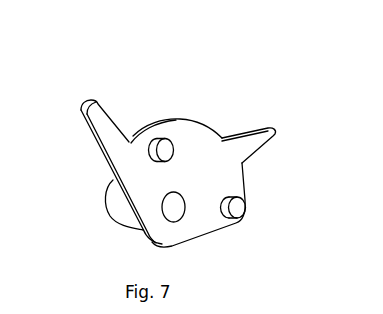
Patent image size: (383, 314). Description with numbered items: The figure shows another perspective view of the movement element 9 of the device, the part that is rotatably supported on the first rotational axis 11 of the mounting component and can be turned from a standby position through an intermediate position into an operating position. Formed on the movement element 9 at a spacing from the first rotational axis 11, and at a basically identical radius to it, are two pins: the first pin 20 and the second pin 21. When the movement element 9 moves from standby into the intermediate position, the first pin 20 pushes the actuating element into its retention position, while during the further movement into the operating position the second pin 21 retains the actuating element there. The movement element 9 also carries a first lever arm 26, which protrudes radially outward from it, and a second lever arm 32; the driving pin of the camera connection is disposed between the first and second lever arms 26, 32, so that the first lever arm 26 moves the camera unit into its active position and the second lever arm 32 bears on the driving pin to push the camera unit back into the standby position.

The movement element 9 is at (204, 109).
The first lever arm 26 is at (82, 107).
The second lever arm 32 is at (266, 130).
The second pin 21 is at (165, 145).
The first rotational axis 11 is at (174, 209).
The first pin 20 is at (238, 208).